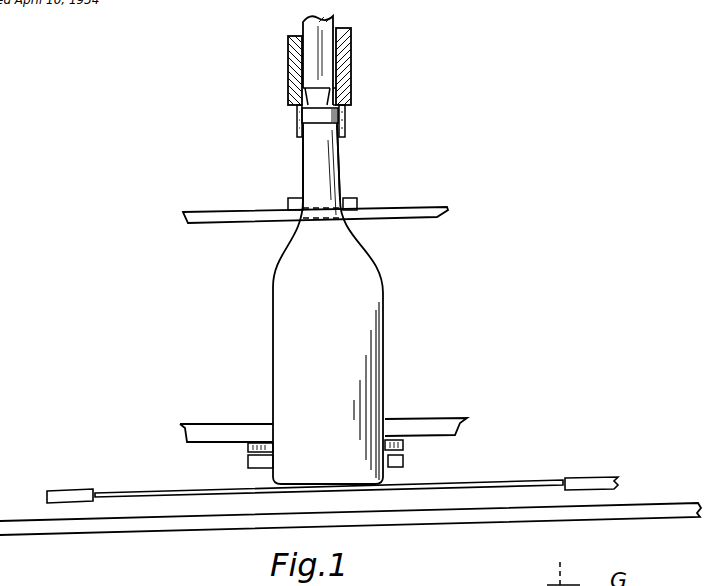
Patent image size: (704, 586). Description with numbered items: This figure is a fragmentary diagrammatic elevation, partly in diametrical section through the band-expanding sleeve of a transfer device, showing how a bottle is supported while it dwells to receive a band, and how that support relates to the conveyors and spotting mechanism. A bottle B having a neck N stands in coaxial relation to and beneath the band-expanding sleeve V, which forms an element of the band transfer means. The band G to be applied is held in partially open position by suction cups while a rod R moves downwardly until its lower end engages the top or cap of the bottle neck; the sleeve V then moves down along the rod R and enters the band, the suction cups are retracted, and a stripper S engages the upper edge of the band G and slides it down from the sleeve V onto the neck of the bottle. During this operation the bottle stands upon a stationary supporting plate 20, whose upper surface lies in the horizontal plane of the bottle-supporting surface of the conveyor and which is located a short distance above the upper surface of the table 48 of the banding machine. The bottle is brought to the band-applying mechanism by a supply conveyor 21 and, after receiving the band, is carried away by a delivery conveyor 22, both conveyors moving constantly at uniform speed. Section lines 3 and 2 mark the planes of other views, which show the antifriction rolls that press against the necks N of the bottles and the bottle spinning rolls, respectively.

The bottle B is at (375, 304).
The neck N is at (332, 164).
The rod R is at (311, 46).
The band-expanding sleeve V is at (338, 24).
The stripper S is at (348, 100).
The band G is at (343, 128).
The section line 3- 3 is at (202, 190).
The section line 2- 2 is at (193, 385).
The stationary supporting plate 20 is at (422, 483).
The supply conveyor 21 is at (60, 495).
The delivery conveyor 22 is at (593, 481).
The table 48 is at (72, 525).